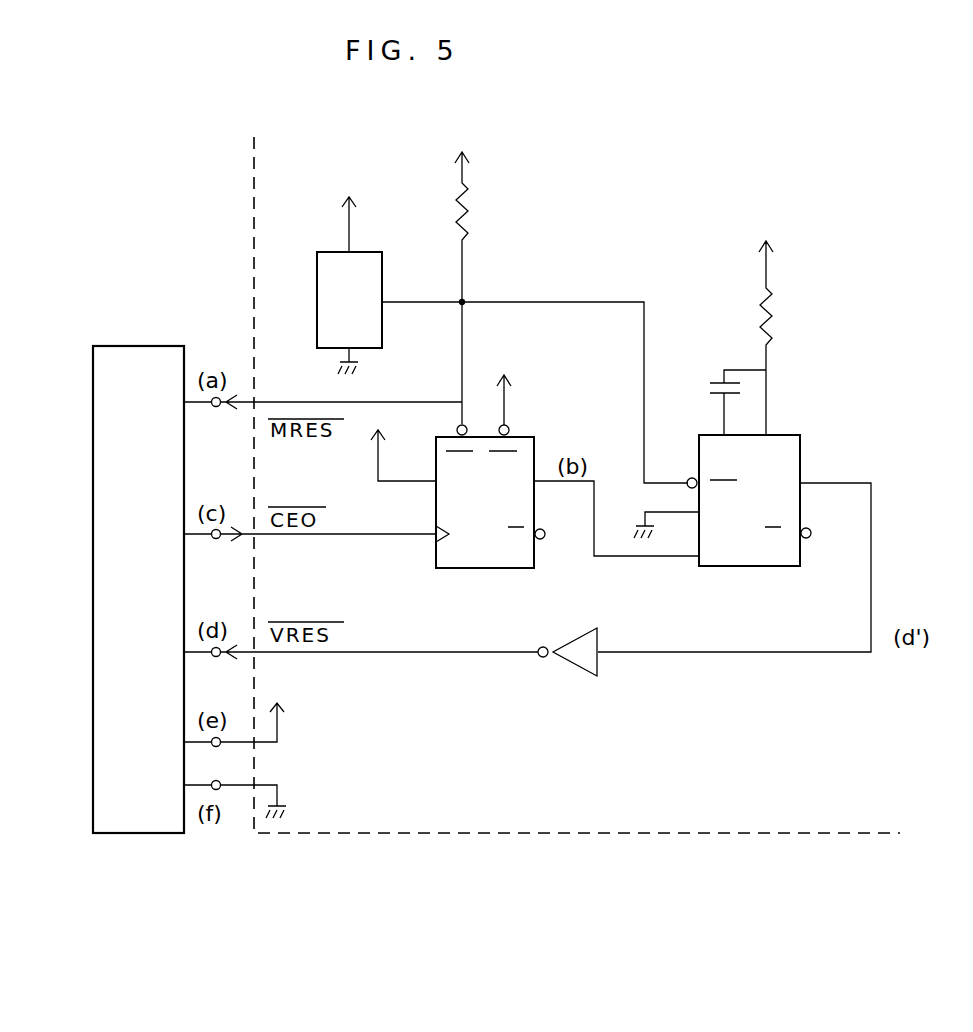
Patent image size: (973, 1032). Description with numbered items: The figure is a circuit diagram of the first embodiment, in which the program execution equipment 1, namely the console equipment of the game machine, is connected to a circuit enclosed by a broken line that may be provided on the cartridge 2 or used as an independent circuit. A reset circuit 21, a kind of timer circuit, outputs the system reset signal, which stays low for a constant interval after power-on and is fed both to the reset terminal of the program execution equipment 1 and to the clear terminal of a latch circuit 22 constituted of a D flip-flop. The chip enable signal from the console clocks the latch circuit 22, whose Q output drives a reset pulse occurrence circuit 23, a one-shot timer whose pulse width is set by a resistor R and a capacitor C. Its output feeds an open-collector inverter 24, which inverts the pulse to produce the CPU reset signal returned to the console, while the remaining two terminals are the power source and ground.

The program execution equipment 1 is at (93, 700).
The cartridge 2 is at (422, 782).
The reset circuit 21 is at (382, 290).
The latch circuit 22 is at (522, 433).
The reset pulse occurrence circuit 23 is at (800, 448).
The open-collector inverter 24 is at (598, 660).
The resistor R is at (782, 343).
The capacitor C is at (715, 384).